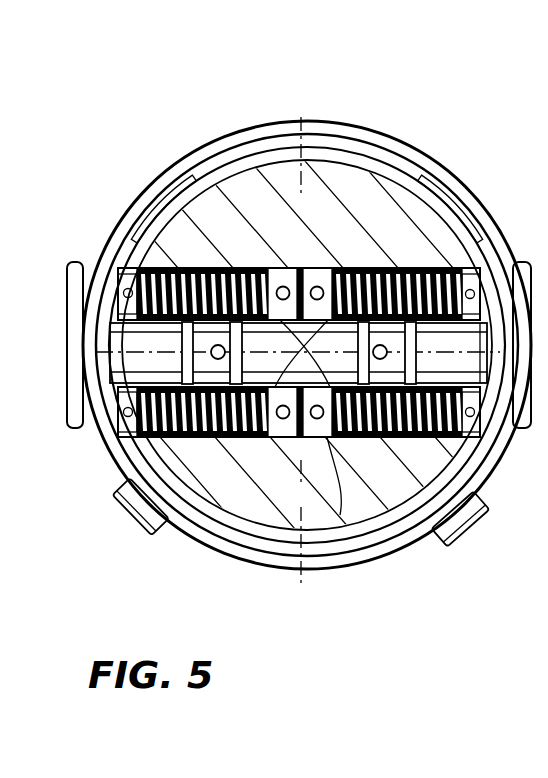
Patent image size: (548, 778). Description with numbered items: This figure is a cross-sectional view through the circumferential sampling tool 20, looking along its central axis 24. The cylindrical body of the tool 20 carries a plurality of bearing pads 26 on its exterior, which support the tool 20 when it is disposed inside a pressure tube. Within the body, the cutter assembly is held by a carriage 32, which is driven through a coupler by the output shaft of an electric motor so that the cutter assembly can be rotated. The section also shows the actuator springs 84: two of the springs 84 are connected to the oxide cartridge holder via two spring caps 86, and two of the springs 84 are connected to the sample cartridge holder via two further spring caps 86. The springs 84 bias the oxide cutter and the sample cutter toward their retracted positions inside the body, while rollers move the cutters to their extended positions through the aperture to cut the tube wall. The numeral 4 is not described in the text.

The circumferential sampling tool 20 is at (274, 347).
The outer ring 4 is at (501, 237).
The central axis 24 is at (378, 548).
The carriage 32 is at (246, 522).
The springs 84 is at (178, 196).
The spring caps 86 is at (328, 268).
The bearing pads 26 is at (133, 532).